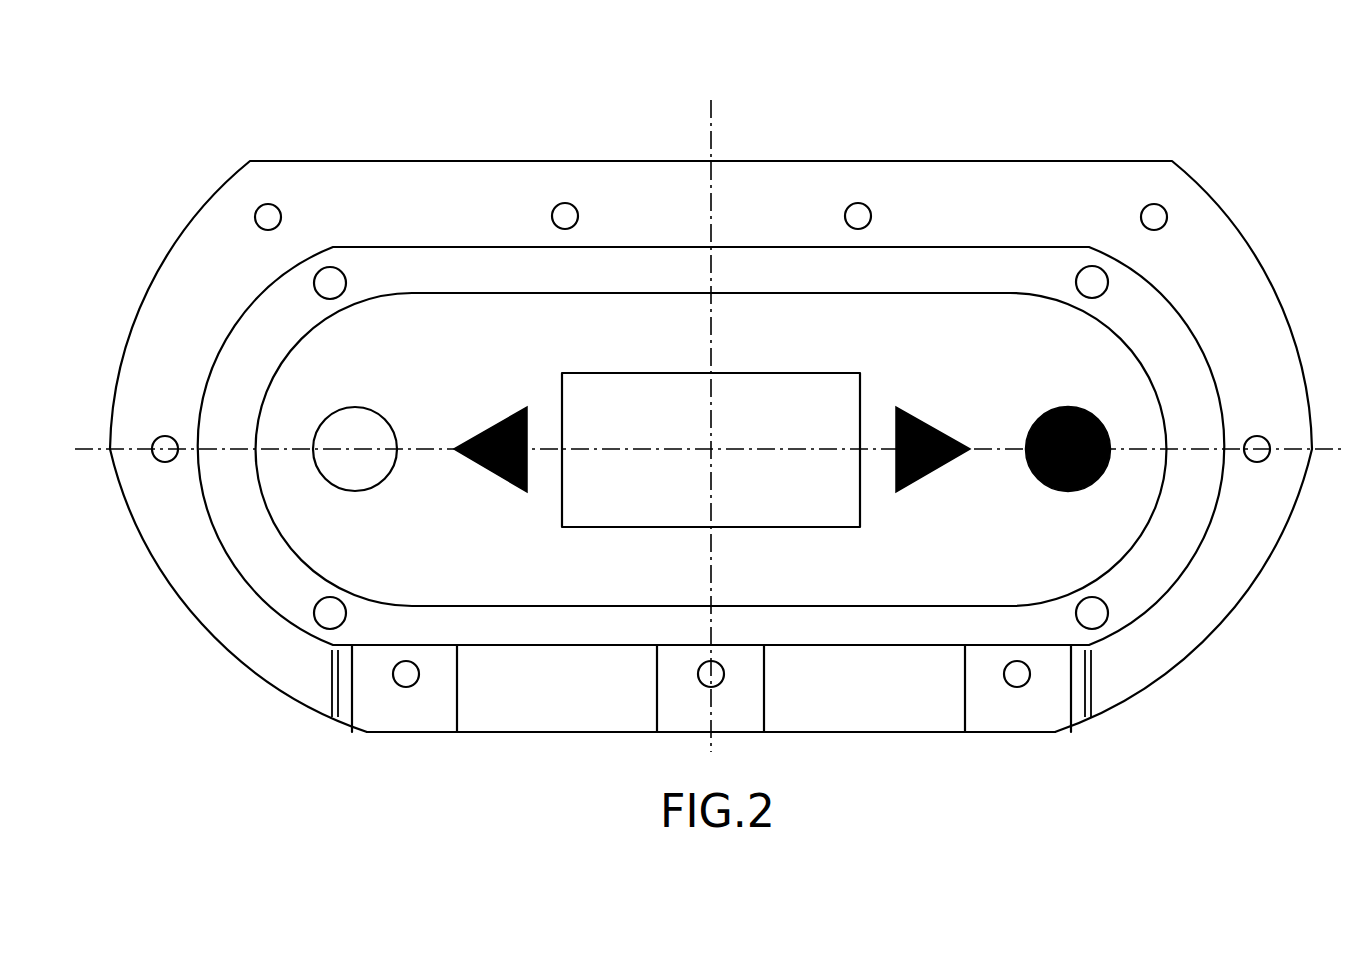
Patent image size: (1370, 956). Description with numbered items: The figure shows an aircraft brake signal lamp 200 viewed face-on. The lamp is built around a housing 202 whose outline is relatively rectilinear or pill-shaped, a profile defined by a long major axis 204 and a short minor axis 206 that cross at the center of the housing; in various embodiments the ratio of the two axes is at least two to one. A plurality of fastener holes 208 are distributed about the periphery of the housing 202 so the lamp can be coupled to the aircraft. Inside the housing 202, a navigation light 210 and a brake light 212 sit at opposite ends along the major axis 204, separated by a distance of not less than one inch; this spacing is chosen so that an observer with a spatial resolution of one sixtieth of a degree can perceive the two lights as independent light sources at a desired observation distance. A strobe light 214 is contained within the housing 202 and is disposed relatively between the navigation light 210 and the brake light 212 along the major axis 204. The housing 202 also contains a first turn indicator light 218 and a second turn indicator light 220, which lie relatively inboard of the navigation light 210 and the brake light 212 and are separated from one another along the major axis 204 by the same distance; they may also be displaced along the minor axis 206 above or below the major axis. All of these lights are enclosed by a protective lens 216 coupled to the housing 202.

The aircraft brake signal lamp 200 is at (1166, 101).
The housing 202 is at (1253, 237).
The major axis 204 is at (1333, 448).
The minor axis 206 is at (712, 112).
The fastener holes 208 is at (1164, 227).
The navigation light 210 is at (378, 412).
The brake light 212 is at (1073, 409).
The strobe light 214 is at (833, 378).
The protective lens 216 is at (963, 258).
The first turn indicator light 218 is at (503, 480).
The second turn indicator light 220 is at (910, 485).